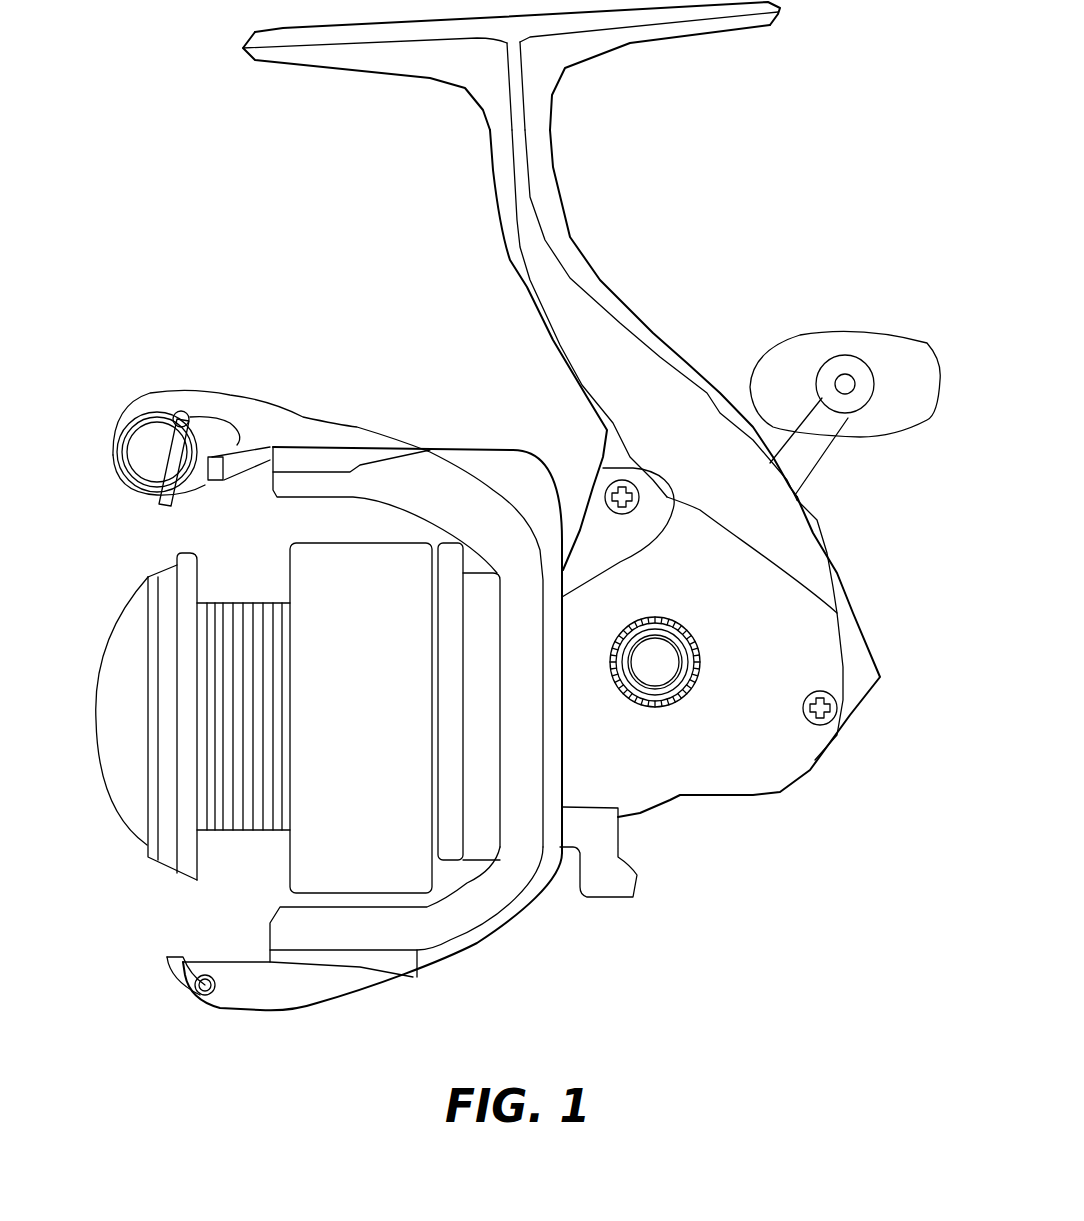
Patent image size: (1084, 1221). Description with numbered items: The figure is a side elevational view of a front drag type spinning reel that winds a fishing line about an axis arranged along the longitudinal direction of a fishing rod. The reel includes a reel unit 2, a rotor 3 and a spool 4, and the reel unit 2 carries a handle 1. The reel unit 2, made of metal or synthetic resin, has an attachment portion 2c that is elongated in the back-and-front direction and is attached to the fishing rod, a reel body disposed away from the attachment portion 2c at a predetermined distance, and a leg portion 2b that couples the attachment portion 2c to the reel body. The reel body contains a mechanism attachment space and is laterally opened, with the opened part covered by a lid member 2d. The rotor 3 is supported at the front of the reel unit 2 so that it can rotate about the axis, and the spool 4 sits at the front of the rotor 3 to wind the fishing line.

The handle 1 is at (810, 447).
The reel unit 2 is at (720, 430).
The leg portion 2b is at (612, 330).
The attachment portion 2c is at (647, 43).
The lid member 2d is at (737, 725).
The rotor 3 is at (453, 490).
The spool 4 is at (230, 633).